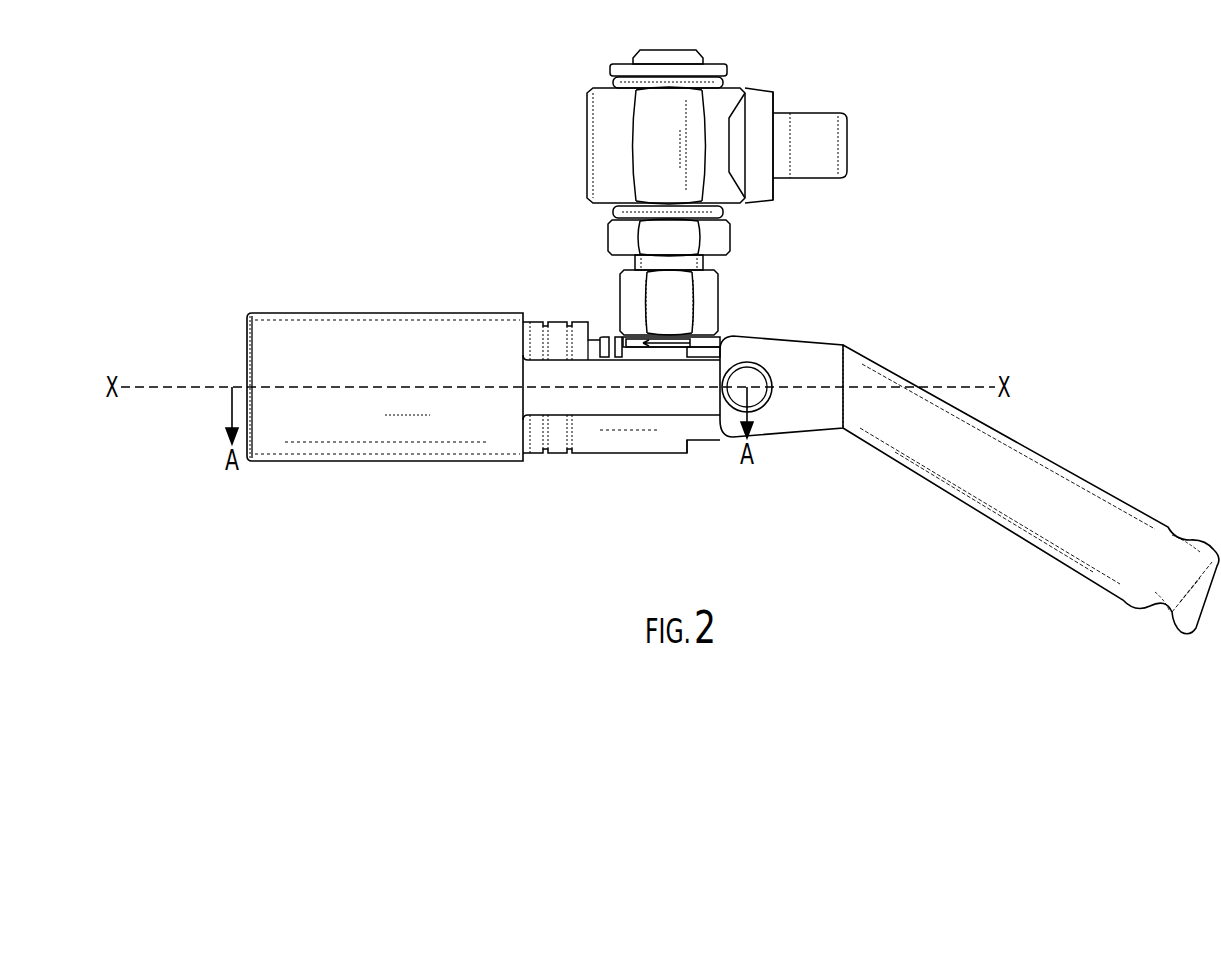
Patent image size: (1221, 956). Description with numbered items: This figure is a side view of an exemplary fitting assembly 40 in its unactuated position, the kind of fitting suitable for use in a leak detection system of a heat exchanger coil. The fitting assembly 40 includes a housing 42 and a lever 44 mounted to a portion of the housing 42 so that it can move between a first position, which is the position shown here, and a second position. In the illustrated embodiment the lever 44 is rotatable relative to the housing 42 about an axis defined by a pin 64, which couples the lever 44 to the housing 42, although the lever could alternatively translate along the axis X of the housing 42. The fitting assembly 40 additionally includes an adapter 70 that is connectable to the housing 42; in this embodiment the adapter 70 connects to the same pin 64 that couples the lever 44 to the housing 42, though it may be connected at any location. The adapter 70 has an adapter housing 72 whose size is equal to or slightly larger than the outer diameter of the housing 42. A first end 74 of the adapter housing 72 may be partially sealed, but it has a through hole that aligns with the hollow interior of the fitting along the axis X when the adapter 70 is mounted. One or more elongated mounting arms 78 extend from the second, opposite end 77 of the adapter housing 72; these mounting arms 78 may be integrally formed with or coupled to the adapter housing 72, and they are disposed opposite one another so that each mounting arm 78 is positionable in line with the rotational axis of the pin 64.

The fitting assembly 40 is at (877, 345).
The housing 42 is at (560, 446).
The lever 44 is at (1042, 520).
The pin 64 is at (752, 378).
The adapter 70 is at (377, 310).
The adapter housing 72 is at (375, 415).
The first end 74 is at (246, 350).
The second end 77 is at (530, 312).
The mounting arm 78 is at (650, 400).